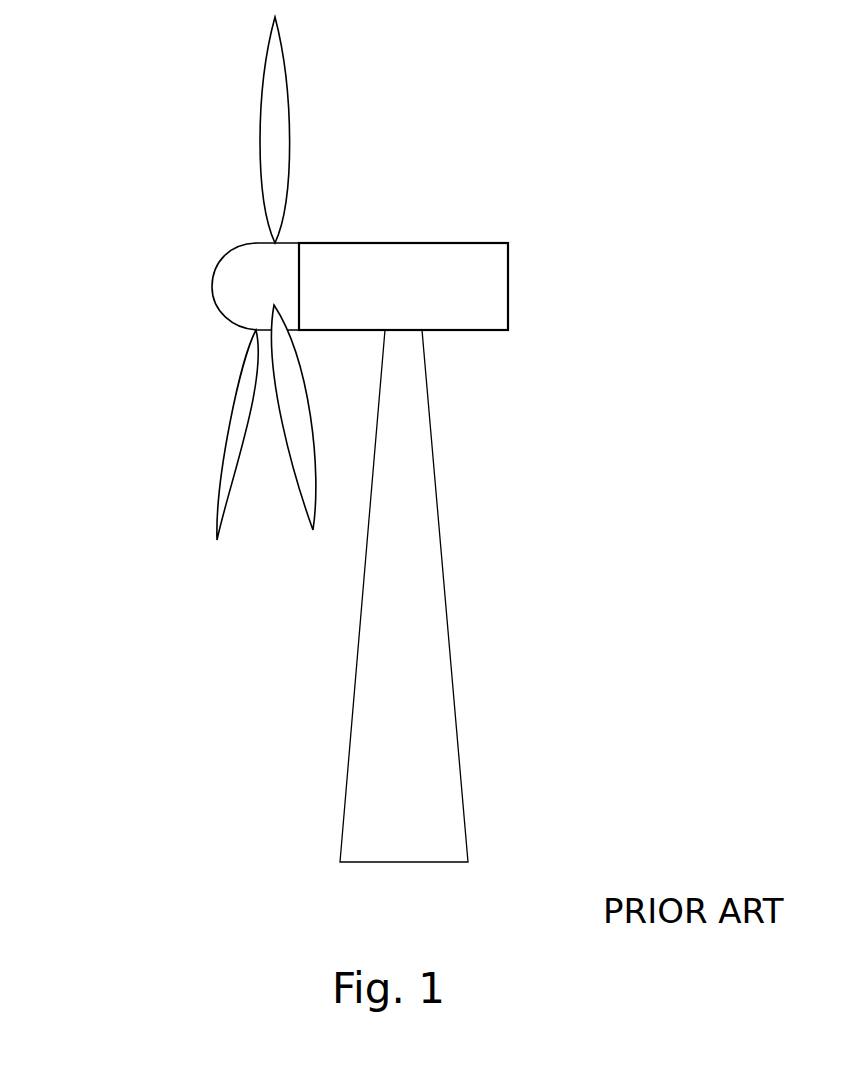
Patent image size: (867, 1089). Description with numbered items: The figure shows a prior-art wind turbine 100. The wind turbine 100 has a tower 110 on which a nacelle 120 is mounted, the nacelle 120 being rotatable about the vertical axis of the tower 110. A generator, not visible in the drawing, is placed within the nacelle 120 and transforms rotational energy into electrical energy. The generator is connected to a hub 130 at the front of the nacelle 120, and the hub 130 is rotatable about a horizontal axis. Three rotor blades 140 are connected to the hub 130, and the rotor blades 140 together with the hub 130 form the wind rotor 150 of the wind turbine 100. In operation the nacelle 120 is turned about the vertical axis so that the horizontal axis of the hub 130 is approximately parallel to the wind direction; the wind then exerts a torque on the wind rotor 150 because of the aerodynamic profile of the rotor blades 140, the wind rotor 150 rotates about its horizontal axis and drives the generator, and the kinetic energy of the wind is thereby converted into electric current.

The wind turbine 100 is at (703, 109).
The tower 110 is at (450, 627).
The nacelle 120 is at (508, 272).
The hub 130 is at (278, 267).
The rotor blades 140 is at (262, 128).
The wind rotor 150 is at (176, 285).